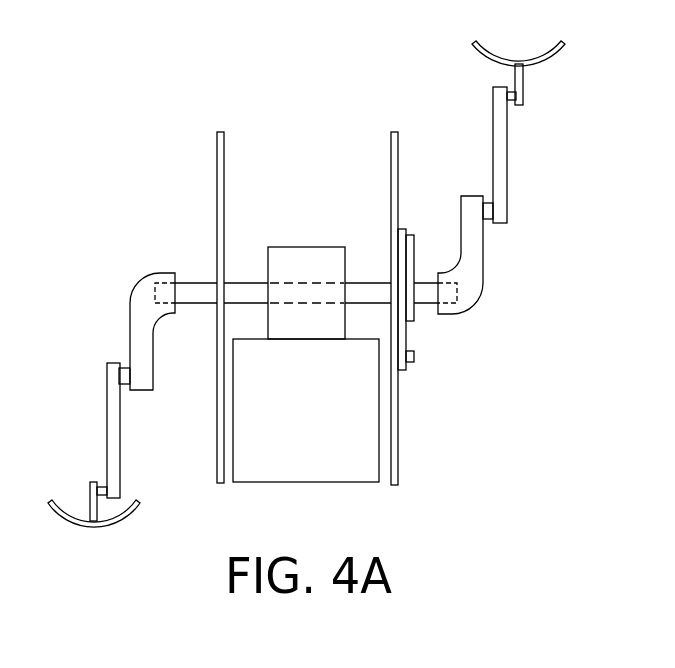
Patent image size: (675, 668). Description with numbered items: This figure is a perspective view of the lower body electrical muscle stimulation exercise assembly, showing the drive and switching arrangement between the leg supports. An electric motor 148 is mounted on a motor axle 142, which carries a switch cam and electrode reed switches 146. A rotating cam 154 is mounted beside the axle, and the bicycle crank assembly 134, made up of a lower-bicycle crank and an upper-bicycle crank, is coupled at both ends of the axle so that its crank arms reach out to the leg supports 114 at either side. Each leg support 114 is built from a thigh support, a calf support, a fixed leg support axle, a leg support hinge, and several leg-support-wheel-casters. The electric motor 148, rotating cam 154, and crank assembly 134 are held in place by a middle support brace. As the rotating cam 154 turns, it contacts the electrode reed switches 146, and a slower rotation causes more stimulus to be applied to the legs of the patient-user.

The leg support 114 is at (493, 50).
The bicycle crank assembly 134 is at (483, 261).
The motor axle 142 is at (360, 283).
The electrode reed switches 146 is at (414, 356).
The electric motor 148 is at (306, 446).
The rotating cam 154 is at (415, 251).